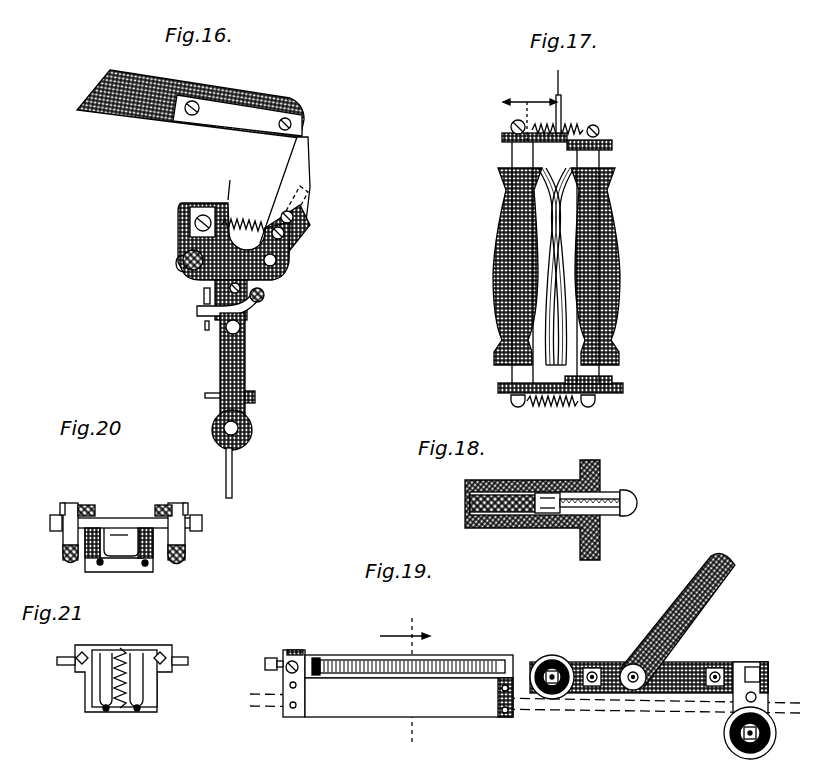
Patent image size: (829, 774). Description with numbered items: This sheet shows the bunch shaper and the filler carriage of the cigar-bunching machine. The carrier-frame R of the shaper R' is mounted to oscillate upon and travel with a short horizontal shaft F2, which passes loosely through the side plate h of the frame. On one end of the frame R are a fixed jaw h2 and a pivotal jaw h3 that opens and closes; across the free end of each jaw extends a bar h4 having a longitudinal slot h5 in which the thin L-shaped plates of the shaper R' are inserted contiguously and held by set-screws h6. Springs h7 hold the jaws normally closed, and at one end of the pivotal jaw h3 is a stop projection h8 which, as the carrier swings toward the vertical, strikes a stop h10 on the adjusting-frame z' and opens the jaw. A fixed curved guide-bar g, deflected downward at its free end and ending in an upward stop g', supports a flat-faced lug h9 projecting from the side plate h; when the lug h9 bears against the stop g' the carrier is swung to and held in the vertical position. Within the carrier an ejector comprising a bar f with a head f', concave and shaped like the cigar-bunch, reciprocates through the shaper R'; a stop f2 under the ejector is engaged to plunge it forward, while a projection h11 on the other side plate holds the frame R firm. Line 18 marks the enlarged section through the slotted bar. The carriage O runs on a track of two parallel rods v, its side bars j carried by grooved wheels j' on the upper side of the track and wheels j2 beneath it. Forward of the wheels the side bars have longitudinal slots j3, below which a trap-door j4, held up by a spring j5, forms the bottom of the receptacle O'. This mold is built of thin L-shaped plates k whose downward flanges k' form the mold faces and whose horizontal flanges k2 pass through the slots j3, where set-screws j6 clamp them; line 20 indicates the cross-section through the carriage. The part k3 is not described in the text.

In FIG. 16, the frame z' is at (190, 109).
In FIG. 16, the stop h10 is at (260, 125).
In FIG. 16, the stop projection h8 is at (300, 165).
In FIG. 17, the stop projection h8 is at (623, 390).
In FIG. 16, the fixed jaw h2 is at (188, 228).
In FIG. 17, the fixed jaw h2 is at (502, 137).
In FIG. 18, the fixed jaw h2 is at (605, 545).
In FIG. 16, the spring h7 is at (238, 215).
In FIG. 17, the spring h7 is at (560, 124).
In FIG. 16, the set-screw h6 is at (201, 219).
In FIG. 17, the set-screw h6 is at (514, 123).
In FIG. 18, the set-screw h6 is at (628, 498).
In FIG. 16, the pivotal jaw h3 is at (295, 243).
In FIG. 17, the pivotal jaw h3 is at (612, 146).
In FIG. 16, the horizontal shaft F2 is at (182, 260).
In FIG. 16, the flat-faced lug h9 is at (204, 296).
In FIG. 16, the guide-bar g is at (236, 315).
In FIG. 16, the stop g' is at (183, 337).
In FIG. 16, the carrier-frame R is at (300, 315).
In FIG. 17, the carrier-frame R is at (445, 370).
In FIG. 18, the carrier-frame R is at (442, 505).
In FIG. 16, the side plate h is at (246, 370).
In FIG. 16, the stop f2 is at (207, 394).
In FIG. 16, the bar f is at (248, 473).
In FIG. 17, the projection h11 is at (557, 90).
In FIG. 17, the section line 18 is at (530, 110).
In FIG. 17, the plate k3 is at (612, 380).
In FIG. 17, the bar h4 is at (512, 272).
In FIG. 18, the bar h4 is at (530, 490).
In FIG. 17, the head f' is at (595, 266).
In FIG. 17, the shaper R' is at (602, 246).
In FIG. 18, the longitudinal slot h5 is at (545, 515).
In FIG. 20, the horizontal flange k2 is at (60, 522).
In FIG. 21, the horizontal flange k2 is at (57, 661).
In FIG. 19, the horizontal flange k2 is at (345, 662).
In FIG. 20, the side bar j is at (122, 511).
In FIG. 21, the side bar j is at (109, 678).
In FIG. 19, the side bar j is at (525, 685).
In FIG. 20, the grooved wheel j' is at (112, 489).
In FIG. 19, the grooved wheel j' is at (552, 653).
In FIG. 20, the longitudinal slot j3 is at (95, 508).
In FIG. 19, the longitudinal slot j3 is at (690, 608).
In FIG. 20, the trap-door j4 is at (120, 572).
In FIG. 21, the trap-door j4 is at (105, 712).
In FIG. 20, the L-shaped plate k is at (121, 541).
In FIG. 21, the L-shaped plate k is at (124, 662).
In FIG. 20, the downward-extending flange k' is at (120, 576).
In FIG. 21, the downward-extending flange k' is at (121, 727).
In FIG. 20, the track rod v is at (68, 565).
In FIG. 19, the track rod v is at (637, 695).
In FIG. 20, the carriage O is at (204, 530).
In FIG. 21, the carriage O is at (196, 690).
In FIG. 19, the carriage O is at (544, 599).
In FIG. 21, the receptacle O' is at (148, 630).
In FIG. 19, the receptacle O' is at (448, 622).
In FIG. 21, the spring j5 is at (112, 680).
In FIG. 21, the set-screw j6 is at (80, 653).
In FIG. 19, the set-screw j6 is at (270, 658).
In FIG. 19, the section line 20 is at (405, 621).
In FIG. 19, the wheel j2 is at (724, 733).